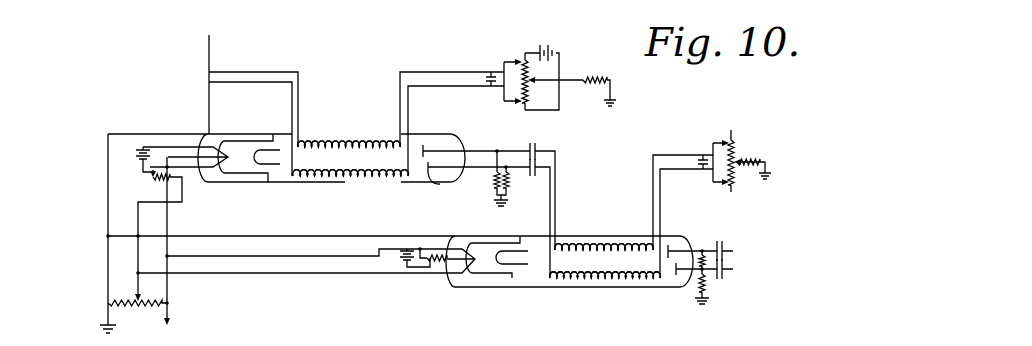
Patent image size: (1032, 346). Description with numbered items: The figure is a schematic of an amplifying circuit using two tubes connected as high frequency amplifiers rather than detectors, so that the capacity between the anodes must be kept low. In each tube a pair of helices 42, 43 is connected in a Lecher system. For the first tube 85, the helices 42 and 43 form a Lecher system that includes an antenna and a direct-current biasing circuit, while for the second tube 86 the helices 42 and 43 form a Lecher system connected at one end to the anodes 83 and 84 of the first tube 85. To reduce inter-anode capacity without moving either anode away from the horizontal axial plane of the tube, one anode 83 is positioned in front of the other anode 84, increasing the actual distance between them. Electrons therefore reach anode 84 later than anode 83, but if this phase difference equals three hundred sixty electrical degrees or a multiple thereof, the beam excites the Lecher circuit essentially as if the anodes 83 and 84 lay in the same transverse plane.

The helix 42 is at (350, 139).
The helix 43 is at (347, 178).
The anode 83 is at (424, 145).
The anode 84 is at (440, 184).
The first tube 85 is at (309, 135).
The second tube 86 is at (569, 235).